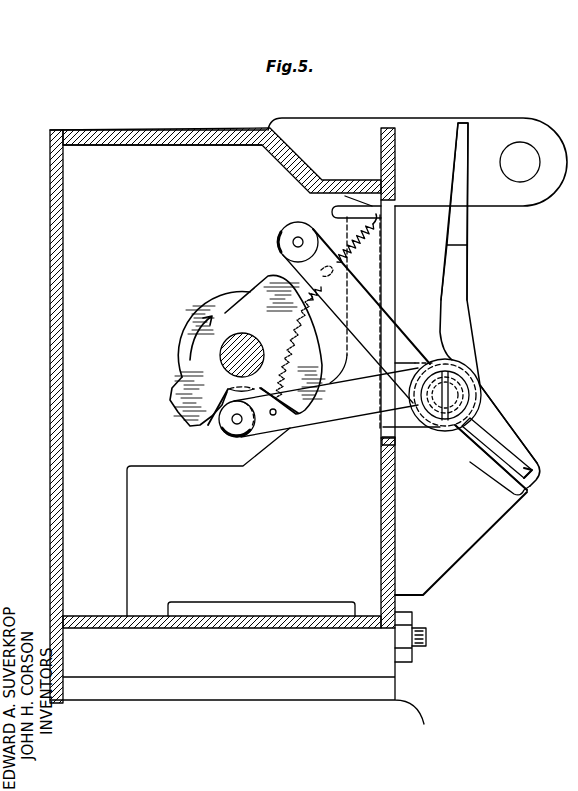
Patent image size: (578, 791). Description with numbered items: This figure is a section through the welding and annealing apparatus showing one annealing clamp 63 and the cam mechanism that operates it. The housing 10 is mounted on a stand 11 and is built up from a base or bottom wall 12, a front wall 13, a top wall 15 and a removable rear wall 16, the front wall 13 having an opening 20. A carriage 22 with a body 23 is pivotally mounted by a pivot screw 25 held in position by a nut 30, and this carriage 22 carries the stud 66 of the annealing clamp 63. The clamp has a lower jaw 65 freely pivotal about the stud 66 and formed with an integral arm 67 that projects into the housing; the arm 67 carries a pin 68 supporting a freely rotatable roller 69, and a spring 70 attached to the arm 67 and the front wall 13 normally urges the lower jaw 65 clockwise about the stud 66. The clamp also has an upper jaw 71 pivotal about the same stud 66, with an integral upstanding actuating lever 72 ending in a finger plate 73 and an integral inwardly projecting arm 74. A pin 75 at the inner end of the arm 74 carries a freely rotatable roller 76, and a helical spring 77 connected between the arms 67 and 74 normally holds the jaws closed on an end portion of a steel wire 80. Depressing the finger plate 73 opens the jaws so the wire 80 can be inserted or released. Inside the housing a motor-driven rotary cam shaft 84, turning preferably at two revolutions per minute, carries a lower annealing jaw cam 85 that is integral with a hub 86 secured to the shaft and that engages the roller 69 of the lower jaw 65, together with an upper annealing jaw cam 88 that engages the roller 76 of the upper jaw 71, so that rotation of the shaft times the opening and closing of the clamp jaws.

The housing 10 is at (217, 122).
The stand 11 is at (415, 710).
The base or bottom wall 12 is at (262, 628).
The front wall 13 is at (397, 472).
The top wall 15 is at (135, 130).
The removable rear wall 16 is at (32, 313).
The opening 20 is at (383, 440).
The carriage 22 is at (480, 553).
The carriage body 23 is at (127, 506).
The pivot screw 25 is at (428, 641).
The nut 30 is at (414, 620).
The annealing clamp 63 is at (490, 361).
The lower jaw 65 is at (478, 456).
The stud 66 is at (468, 388).
The arm 67 is at (399, 346).
The pin 68 is at (298, 242).
The roller 69 is at (278, 240).
The spring 70 is at (350, 248).
The upper jaw 71 is at (512, 437).
The actuating lever 72 is at (460, 298).
The finger plate 73 is at (459, 226).
The arm 74 is at (354, 413).
The pin 75 is at (237, 425).
The roller 76 is at (232, 430).
The helical spring 77 is at (302, 345).
The steel wire 80 is at (522, 470).
The rotary cam shaft 84 is at (236, 346).
The lower annealing jaw cam 85 is at (270, 286).
The hub 86 is at (206, 352).
The upper annealing jaw cam 88 is at (185, 410).